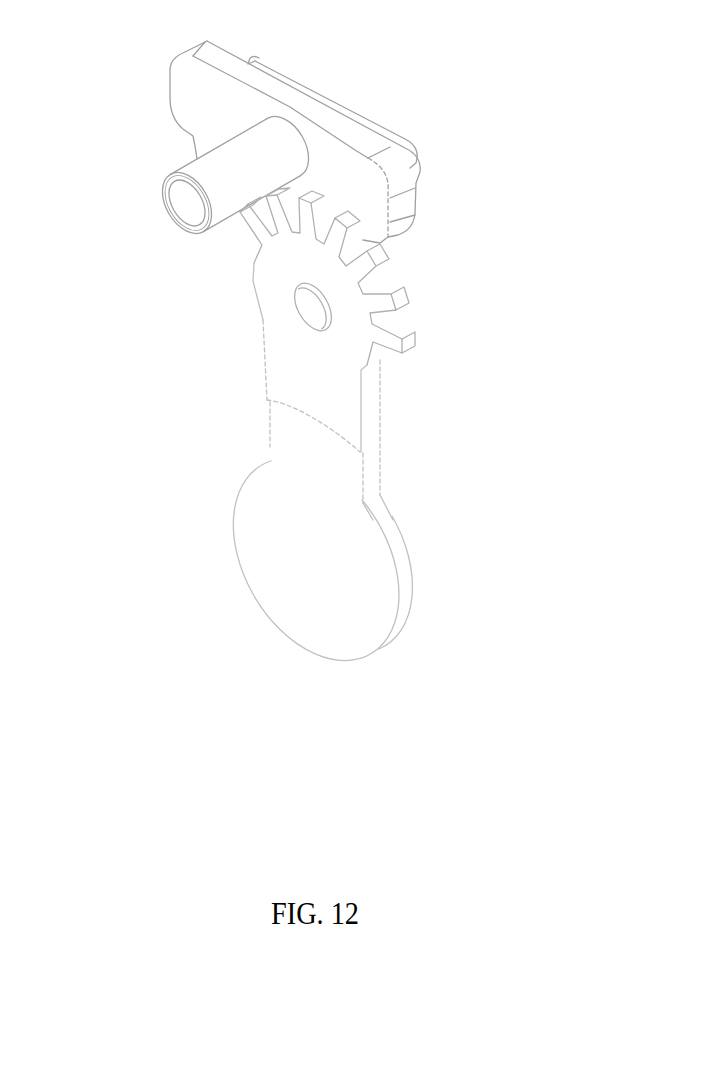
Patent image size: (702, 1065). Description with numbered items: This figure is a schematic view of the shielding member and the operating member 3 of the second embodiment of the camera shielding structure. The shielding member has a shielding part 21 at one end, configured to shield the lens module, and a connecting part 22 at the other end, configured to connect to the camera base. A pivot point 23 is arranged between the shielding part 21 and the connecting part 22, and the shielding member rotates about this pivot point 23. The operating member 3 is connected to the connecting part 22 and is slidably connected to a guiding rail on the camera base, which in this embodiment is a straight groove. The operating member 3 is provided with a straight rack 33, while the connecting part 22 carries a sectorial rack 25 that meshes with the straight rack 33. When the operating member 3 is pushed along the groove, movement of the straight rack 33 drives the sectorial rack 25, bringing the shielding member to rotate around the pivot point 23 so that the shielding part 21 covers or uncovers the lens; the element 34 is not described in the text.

The operating member 3 is at (203, 103).
The guide rib 34 is at (330, 102).
The straight rack 33 is at (357, 245).
The sectorial rack 25 is at (363, 282).
The pivot point 23 is at (310, 308).
The connecting part 22 is at (330, 343).
The shielding part 21 is at (315, 597).